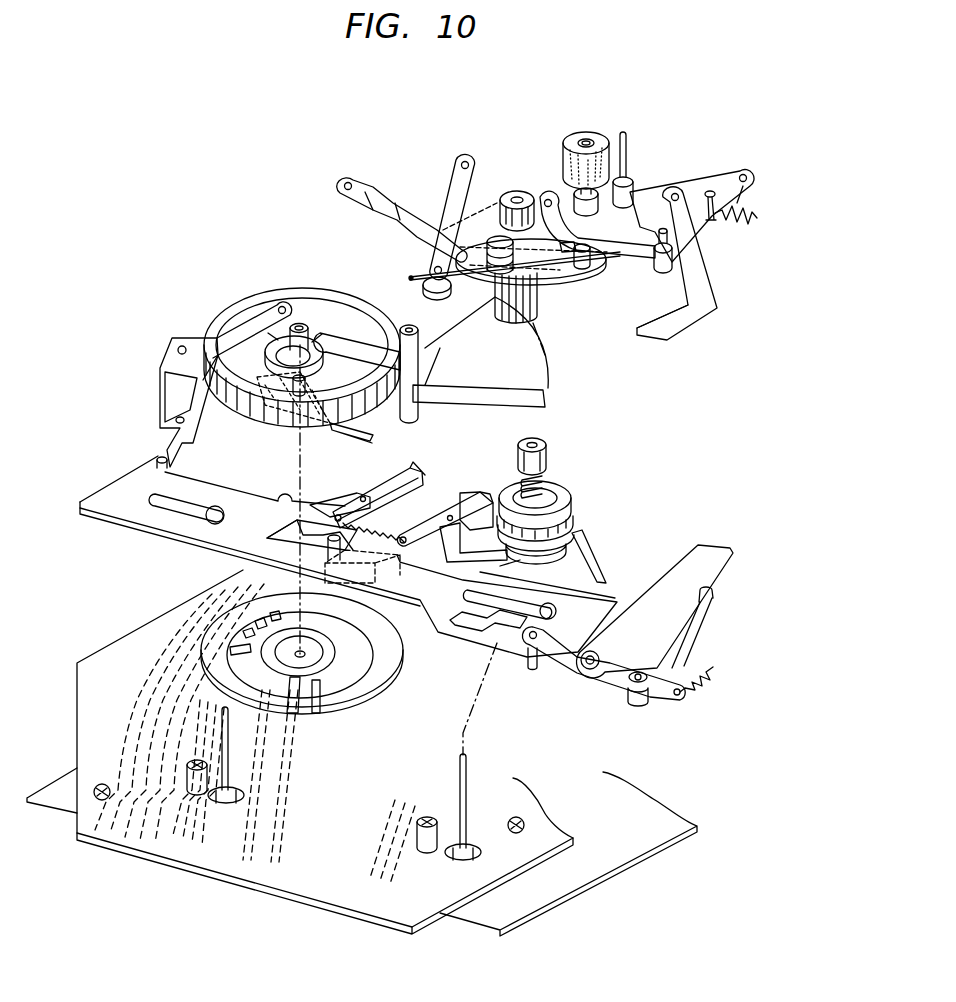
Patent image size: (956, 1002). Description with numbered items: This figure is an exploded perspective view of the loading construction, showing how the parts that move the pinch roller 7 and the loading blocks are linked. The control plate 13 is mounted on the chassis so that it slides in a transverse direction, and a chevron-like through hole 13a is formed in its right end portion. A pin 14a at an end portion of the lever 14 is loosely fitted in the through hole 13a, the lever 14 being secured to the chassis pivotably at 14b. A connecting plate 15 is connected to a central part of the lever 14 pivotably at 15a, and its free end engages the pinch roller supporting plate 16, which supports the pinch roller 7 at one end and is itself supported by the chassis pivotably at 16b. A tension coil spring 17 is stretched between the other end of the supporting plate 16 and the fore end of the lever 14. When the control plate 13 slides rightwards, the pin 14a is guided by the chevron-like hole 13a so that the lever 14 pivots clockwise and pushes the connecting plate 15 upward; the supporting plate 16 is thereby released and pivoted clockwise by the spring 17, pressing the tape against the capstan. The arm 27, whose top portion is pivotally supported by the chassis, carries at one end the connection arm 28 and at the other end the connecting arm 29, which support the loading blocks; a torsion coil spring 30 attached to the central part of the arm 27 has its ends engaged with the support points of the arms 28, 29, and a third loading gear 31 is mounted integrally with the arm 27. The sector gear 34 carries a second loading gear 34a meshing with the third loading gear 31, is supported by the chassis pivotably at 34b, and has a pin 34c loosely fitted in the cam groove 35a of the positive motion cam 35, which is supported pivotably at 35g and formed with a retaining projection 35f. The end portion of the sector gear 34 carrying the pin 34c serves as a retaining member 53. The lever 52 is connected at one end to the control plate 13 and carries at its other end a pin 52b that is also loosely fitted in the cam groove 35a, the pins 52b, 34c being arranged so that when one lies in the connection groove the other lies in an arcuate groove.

The pinch roller 7 is at (563, 163).
The control plate 13 is at (145, 517).
The chevron-like through hole 13a is at (467, 623).
The lever 14 is at (615, 673).
The pin 14a is at (528, 665).
The pivot of lever 14b is at (645, 682).
The connecting plate 15 is at (708, 295).
The pivot of connecting plate 15a is at (585, 666).
The pinch roller supporting plate 16 is at (707, 180).
The pivot of pinch roller supporting plate 16b is at (714, 220).
The tension coil spring 17 is at (752, 212).
The arm 27 is at (505, 197).
The connection arm 28 is at (398, 223).
The connecting arm 29 is at (445, 192).
The torsion coil spring 30 is at (557, 288).
The third loading gear 31 is at (518, 317).
The sector gear 34 is at (547, 400).
The second loading gear 34a is at (528, 380).
The pivot of sector gear 34b is at (420, 330).
The pin 34c is at (296, 355).
The positive motion cam 35 is at (370, 375).
The cam groove 35a is at (218, 314).
The retaining projection 35f is at (300, 395).
The shaft of positive motion cam 35g is at (298, 345).
The lever 52 is at (167, 360).
The pin 52b is at (283, 350).
The retaining member 53 is at (330, 330).